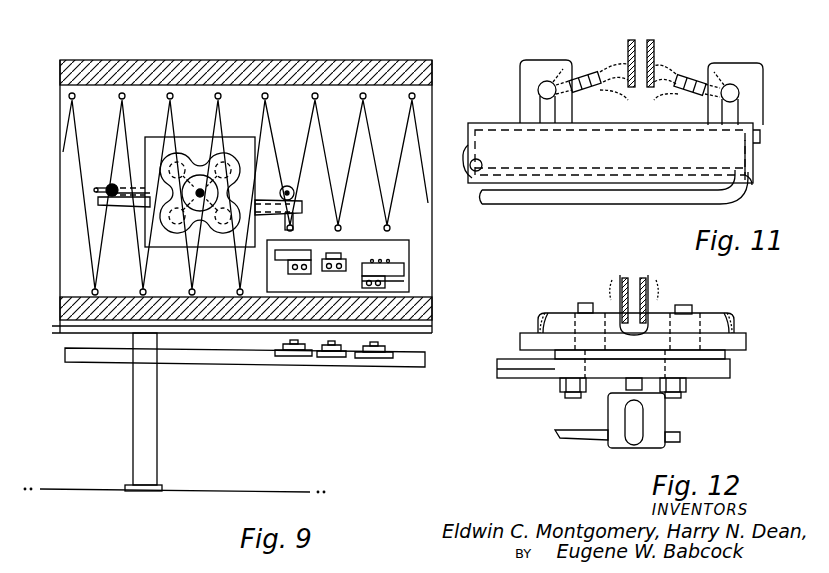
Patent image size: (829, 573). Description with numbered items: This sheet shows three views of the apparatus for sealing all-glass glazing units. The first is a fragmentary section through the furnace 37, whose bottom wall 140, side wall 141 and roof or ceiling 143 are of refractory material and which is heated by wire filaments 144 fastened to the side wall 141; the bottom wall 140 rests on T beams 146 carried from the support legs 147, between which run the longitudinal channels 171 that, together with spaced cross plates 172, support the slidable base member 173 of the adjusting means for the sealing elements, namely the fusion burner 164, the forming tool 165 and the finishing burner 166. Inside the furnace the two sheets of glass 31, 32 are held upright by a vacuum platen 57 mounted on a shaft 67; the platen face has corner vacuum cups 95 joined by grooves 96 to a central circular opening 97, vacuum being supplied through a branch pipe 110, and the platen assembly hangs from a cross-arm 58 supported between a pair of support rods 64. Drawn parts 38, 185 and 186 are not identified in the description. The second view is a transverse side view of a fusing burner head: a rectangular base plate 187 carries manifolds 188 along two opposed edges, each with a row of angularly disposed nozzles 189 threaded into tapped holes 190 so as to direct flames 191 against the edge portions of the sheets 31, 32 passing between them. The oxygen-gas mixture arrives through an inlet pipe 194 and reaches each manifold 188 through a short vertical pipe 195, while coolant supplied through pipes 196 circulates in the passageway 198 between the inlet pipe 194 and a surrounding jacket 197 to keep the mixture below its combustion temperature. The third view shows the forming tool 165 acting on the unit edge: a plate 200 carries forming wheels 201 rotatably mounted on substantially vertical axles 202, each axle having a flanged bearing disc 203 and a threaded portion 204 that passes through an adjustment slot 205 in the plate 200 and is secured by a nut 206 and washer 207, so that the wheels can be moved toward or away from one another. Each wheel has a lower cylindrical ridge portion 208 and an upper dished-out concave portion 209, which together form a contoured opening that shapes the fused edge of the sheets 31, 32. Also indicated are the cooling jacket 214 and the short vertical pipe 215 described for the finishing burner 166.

In FIG. 9, the furnace 37 is at (97, 56).
In FIG. 9, the roof or ceiling 143 is at (205, 76).
In FIG. 9, the wire filaments 144 is at (68, 122).
In FIG. 9, the side wall 141 is at (70, 176).
In FIG. 9, the branch pipe 110 is at (98, 190).
In FIG. 9, the support rods 64 is at (106, 196).
In FIG. 9, the cross-arm 58 is at (106, 205).
In FIG. 9, the carriage 38 is at (123, 214).
In FIG. 9, the sheet of glass 32 is at (152, 157).
In FIG. 11, the sheet of glass 32 is at (628, 42).
In FIG. 12, the sheet of glass 32 is at (622, 290).
In FIG. 9, the vacuum cups 95 is at (172, 160).
In FIG. 9, the grooves 96 is at (190, 163).
In FIG. 9, the circular opening 97 is at (215, 155).
In FIG. 9, the vacuum platen 57 is at (184, 232).
In FIG. 9, the shaft 67 is at (203, 197).
In FIG. 9, the bottom wall 140 is at (62, 305).
In FIG. 9, the T beams 146 is at (70, 326).
In FIG. 9, the fusion burner 164 is at (302, 254).
In FIG. 9, the forming tool 165 is at (338, 255).
In FIG. 9, the finishing burner 166 is at (392, 262).
In FIG. 12, the finishing burner 166 is at (652, 420).
In FIG. 9, the switch box 185 is at (412, 258).
In FIG. 9, the switch mounting plate 186 is at (400, 283).
In FIG. 9, the longitudinal channels 171 is at (206, 355).
In FIG. 9, the cross plates 172 is at (303, 357).
In FIG. 9, the base member 173 is at (342, 358).
In FIG. 9, the support legs 147 is at (143, 399).
In FIG. 11, the manifolds 188 is at (540, 72).
In FIG. 11, the nozzles 189 is at (580, 75).
In FIG. 11, the tapped holes 190 is at (558, 62).
In FIG. 11, the sheet of glass 31 is at (656, 44).
In FIG. 12, the sheet of glass 31 is at (648, 290).
In FIG. 11, the short vertical pipe 195 is at (545, 110).
In FIG. 11, the base plate 187 is at (758, 132).
In FIG. 11, the inlet pipe 194 is at (472, 158).
In FIG. 11, the passageway 198 is at (472, 167).
In FIG. 11, the jacket 197 is at (480, 178).
In FIG. 11, the pipes 196 is at (540, 197).
In FIG. 11, the flames 191 is at (615, 87).
In FIG. 12, the forming wheels 201 is at (545, 313).
In FIG. 12, the concave portion 209 is at (538, 325).
In FIG. 12, the cylindrical ridge portion 208 is at (535, 340).
In FIG. 12, the plate 200 is at (515, 366).
In FIG. 12, the flanged bearing disc 203 is at (568, 357).
In FIG. 12, the adjustment slots 205 is at (552, 378).
In FIG. 12, the nuts 206 is at (576, 394).
In FIG. 12, the axles 202 is at (585, 303).
In FIG. 12, the washers 207 is at (706, 380).
In FIG. 12, the threaded portion 204 is at (672, 398).
In FIG. 12, the jacket 214 is at (568, 435).
In FIG. 12, the short vertical pipe 215 is at (642, 442).